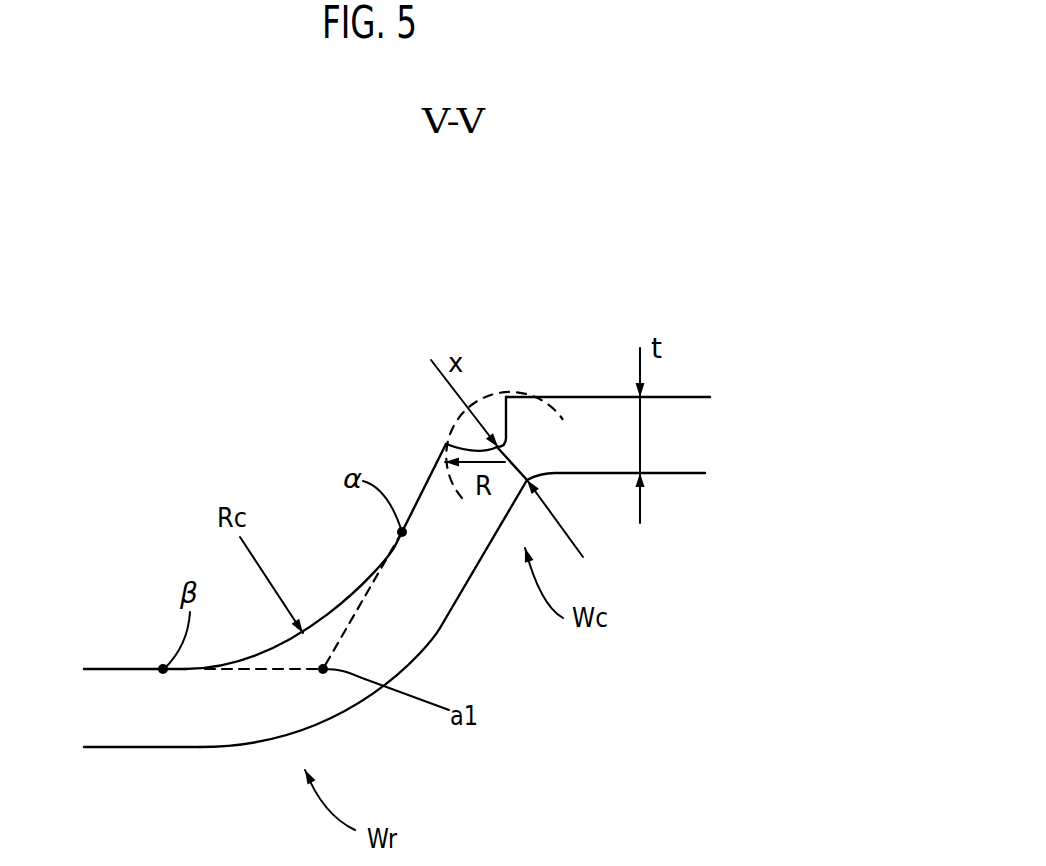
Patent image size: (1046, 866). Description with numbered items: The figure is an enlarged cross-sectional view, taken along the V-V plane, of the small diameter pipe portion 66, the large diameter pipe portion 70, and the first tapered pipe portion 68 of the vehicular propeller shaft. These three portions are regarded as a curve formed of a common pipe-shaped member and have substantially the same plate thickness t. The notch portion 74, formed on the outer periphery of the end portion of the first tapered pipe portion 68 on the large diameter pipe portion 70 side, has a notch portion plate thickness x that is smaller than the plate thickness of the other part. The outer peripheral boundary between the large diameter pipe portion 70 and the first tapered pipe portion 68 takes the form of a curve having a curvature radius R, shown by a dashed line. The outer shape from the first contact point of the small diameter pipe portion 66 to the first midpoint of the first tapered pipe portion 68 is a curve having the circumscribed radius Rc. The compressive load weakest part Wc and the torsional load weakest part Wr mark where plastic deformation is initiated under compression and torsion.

The small diameter pipe portion 66 is at (127, 542).
The first tapered pipe portion 68 is at (260, 377).
The large diameter pipe portion 70 is at (590, 283).
The notch portion 74 is at (501, 409).